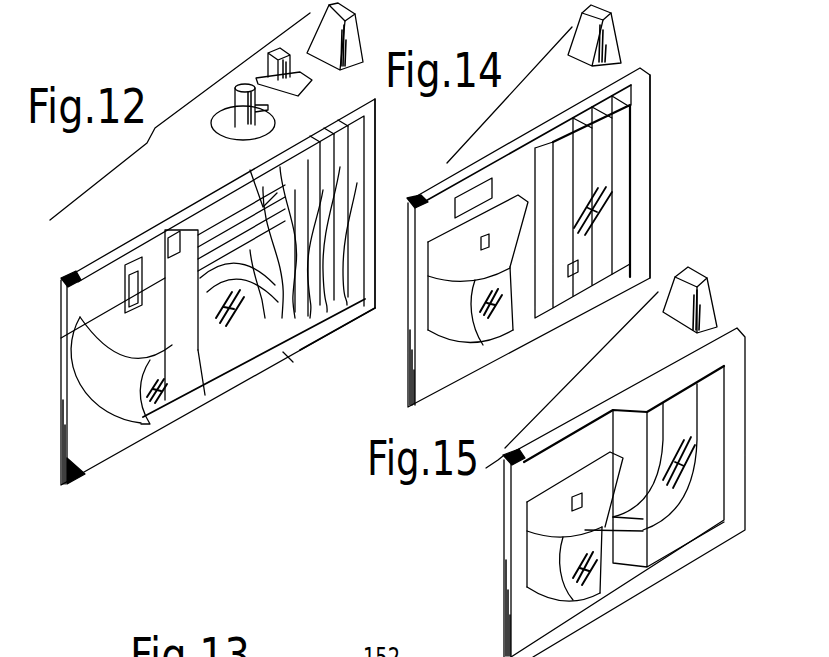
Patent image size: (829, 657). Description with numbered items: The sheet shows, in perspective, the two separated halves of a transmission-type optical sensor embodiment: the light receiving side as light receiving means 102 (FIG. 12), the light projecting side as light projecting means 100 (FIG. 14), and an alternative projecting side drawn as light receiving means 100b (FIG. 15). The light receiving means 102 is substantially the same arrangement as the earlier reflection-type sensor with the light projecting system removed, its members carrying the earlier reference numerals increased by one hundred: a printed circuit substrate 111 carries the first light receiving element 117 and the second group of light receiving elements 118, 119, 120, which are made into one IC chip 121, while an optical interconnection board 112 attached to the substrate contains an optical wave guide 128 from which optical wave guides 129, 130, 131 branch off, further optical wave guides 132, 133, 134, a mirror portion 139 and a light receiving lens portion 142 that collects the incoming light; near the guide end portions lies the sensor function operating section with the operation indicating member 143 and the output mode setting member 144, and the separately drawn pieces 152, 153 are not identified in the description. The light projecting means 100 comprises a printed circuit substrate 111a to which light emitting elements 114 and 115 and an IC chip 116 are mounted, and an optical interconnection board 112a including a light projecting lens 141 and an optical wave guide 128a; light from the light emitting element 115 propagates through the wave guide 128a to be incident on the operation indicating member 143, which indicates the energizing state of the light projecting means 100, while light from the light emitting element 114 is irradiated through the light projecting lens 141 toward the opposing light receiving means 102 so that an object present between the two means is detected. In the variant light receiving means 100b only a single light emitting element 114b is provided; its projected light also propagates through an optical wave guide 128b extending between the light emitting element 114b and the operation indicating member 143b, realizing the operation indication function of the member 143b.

In FIG. 14, the light projecting means 100 is at (665, 112).
In FIG. 15, the light receiving means 100b is at (646, 580).
In FIG. 12, the light receiving means 102 is at (143, 226).
In FIG. 12, the printed circuit substrate 111 is at (375, 128).
In FIG. 14, the printed circuit substrate 111a is at (640, 162).
In FIG. 12, the optical interconnection board 112 is at (352, 320).
In FIG. 14, the optical interconnection board 112a is at (625, 240).
In FIG. 14, the light emitting element 114 is at (477, 250).
In FIG. 15, the light emitting element 114b is at (572, 500).
In FIG. 12, the light emitting element 115 is at (289, 366).
In FIG. 14, the light emitting element 115 is at (572, 276).
In FIG. 14, the IC chip 116 is at (487, 186).
In FIG. 12, the first light receiving element 117 is at (124, 282).
In FIG. 12, the light receiving element 118 is at (164, 243).
In FIG. 12, the light receiving element 119 is at (180, 382).
In FIG. 12, the light receiving element 120 is at (196, 372).
In FIG. 12, the IC chip 121 is at (150, 268).
In FIG. 12, the optical wave guide 128 is at (308, 333).
In FIG. 14, the optical wave guide 128a is at (605, 222).
In FIG. 15, the optical wave guide 128b is at (681, 497).
In FIG. 12, the optical wave guide 129 is at (348, 168).
In FIG. 12, the optical wave guide 130 is at (300, 194).
In FIG. 12, the optical wave guide 131 is at (272, 200).
In FIG. 12, the optical wave guide 132 is at (250, 367).
In FIG. 12, the optical wave guide 133 is at (234, 196).
In FIG. 12, the optical wave guide 134 is at (213, 210).
In FIG. 12, the mirror portion 139 is at (180, 395).
In FIG. 14, the light projecting lens 141 is at (495, 327).
In FIG. 12, the light receiving lens portion 142 is at (130, 413).
In FIG. 12, the operation indicating member 143 is at (355, 41).
In FIG. 14, the operation indicating member 143 is at (616, 42).
In FIG. 15, the operation indicating member 143b is at (673, 311).
In FIG. 12, the output mode setting member 144 is at (280, 53).
In FIG. 12, the disc base 152 is at (232, 97).
In FIG. 12, the cylindrical pin 153 is at (250, 86).